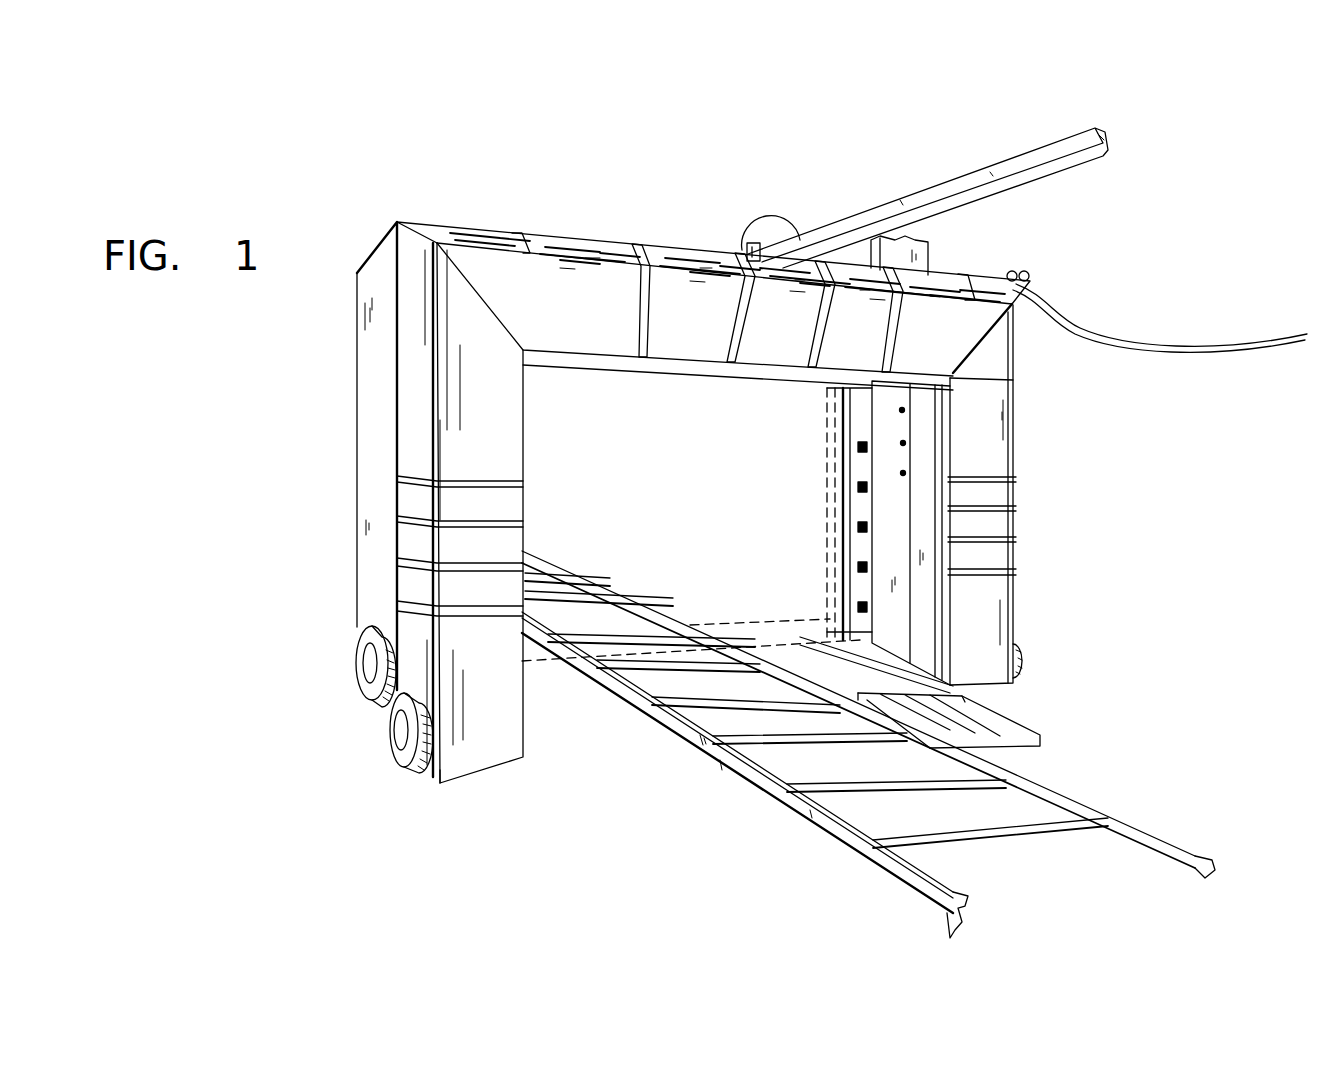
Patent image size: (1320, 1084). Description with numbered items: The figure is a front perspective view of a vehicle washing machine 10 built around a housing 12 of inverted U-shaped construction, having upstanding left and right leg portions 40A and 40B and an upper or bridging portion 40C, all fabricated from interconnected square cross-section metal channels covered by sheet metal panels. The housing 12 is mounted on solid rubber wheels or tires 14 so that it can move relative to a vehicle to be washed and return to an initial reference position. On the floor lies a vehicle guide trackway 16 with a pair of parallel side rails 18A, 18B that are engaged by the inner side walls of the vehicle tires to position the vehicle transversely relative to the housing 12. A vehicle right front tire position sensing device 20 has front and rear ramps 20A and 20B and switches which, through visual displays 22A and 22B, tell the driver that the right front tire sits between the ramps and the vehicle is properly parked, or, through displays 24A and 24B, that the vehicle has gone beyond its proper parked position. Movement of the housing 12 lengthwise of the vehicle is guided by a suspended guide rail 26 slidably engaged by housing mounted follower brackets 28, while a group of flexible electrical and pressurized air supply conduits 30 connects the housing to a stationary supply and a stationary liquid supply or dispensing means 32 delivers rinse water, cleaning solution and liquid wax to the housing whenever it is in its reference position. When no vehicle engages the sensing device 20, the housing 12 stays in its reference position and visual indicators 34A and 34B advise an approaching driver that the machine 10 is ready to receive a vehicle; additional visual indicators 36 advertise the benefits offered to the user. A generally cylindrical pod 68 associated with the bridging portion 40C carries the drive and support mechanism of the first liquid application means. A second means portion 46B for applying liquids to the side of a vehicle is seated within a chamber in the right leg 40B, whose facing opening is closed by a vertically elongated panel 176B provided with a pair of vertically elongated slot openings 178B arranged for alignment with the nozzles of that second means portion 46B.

The vehicle washing machine 10 is at (782, 515).
The housing 12 is at (782, 533).
The solid rubber wheels or tires 14 is at (687, 692).
The vehicle guide trackway 16 is at (891, 744).
The side rail 18A is at (745, 775).
The side rail 18B is at (891, 714).
The vehicle right front tire position sensing device 20 is at (1035, 712).
The front ramp 20A is at (1040, 730).
The rear ramp 20B is at (996, 696).
The visual display 22A is at (390, 547).
The visual display 22B is at (1045, 524).
The display 24A is at (397, 601).
The display 24B is at (1038, 566).
The guide rail 26 is at (953, 198).
The follower brackets 28 is at (730, 238).
The flexible electrical and pressurized air supply conduits 30 is at (1157, 311).
The stationary liquid supply or dispensing means 32 is at (930, 247).
The visual indicator 34A is at (395, 498).
The visual indicator 34B is at (1039, 487).
The additional visual indicators 36 is at (743, 334).
The left leg portion 40A is at (390, 502).
The right leg portion 40B is at (971, 499).
The upper or bridging portion 40C is at (713, 315).
The second means portion 46B is at (763, 514).
The cylindrical pod 68 is at (691, 618).
The vertically elongated panel 176B is at (761, 477).
The vertically elongated slot openings 178B is at (779, 567).